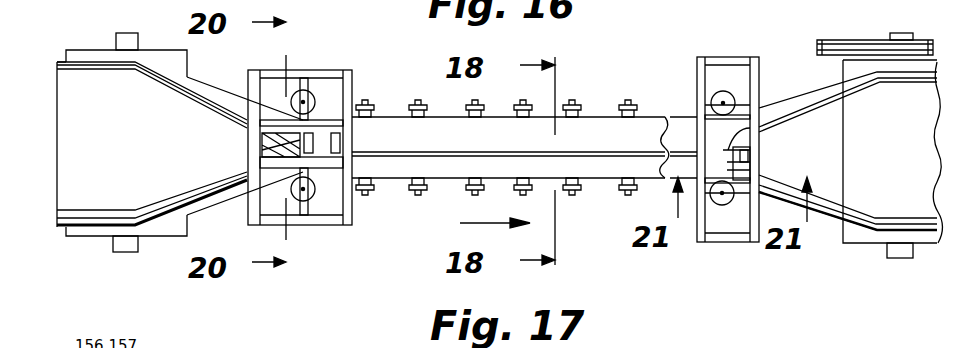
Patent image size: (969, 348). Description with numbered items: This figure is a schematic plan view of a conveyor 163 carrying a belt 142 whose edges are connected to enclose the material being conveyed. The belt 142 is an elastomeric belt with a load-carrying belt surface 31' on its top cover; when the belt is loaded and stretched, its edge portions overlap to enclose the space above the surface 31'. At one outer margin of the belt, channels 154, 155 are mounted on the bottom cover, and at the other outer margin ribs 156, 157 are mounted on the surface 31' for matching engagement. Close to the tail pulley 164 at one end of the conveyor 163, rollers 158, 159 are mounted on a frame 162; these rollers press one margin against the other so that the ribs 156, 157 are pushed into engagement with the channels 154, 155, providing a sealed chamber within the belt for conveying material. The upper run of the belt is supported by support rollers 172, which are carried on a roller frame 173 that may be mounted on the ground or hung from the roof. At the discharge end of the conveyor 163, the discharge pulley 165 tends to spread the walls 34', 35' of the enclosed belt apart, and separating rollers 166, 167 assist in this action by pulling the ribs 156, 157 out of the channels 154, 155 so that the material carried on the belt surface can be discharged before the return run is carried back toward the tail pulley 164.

The load-carrying belt surface 31' is at (163, 143).
The conveyor 163 is at (52, 48).
The tail pulley 164 is at (101, 237).
The belt 142 is at (83, 193).
The rib 156 is at (198, 96).
The rib 157 is at (912, 78).
The channel 154 is at (207, 197).
The channel 155 is at (228, 188).
The frame 162 is at (354, 218).
The roller 159 is at (262, 138).
The roller 158 is at (316, 133).
The wall 34' is at (524, 132).
The wall 35' is at (524, 188).
The support roller 172 is at (373, 109).
The roller frame 173 is at (412, 108).
The separating roller 166 is at (762, 131).
The separating roller 167 is at (745, 149).
The discharge pulley 165 is at (878, 244).